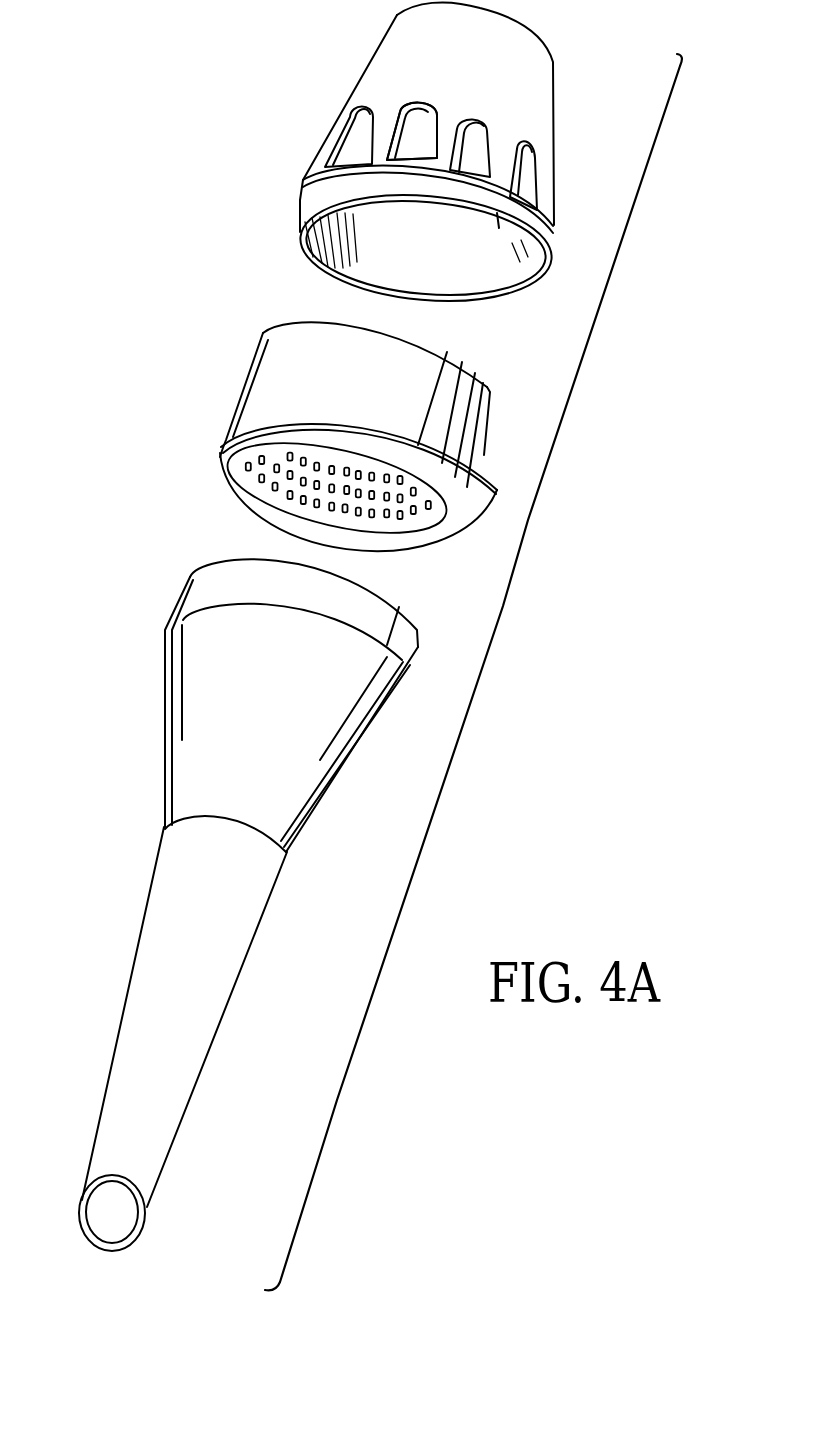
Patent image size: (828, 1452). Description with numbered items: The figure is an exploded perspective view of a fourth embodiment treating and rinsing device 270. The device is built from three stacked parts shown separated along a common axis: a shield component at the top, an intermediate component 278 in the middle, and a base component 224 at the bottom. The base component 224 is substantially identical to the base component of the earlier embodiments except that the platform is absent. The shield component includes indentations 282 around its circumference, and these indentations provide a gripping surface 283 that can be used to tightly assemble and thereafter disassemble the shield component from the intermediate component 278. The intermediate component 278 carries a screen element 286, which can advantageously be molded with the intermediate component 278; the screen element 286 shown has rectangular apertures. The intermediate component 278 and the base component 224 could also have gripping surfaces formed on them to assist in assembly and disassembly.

The base component 224 is at (155, 761).
The treating and rinsing device 270 is at (473, 672).
The intermediate component 278 is at (238, 383).
The indentations 282 is at (490, 143).
The gripping surface 283 is at (423, 101).
The screen element 286 is at (293, 508).